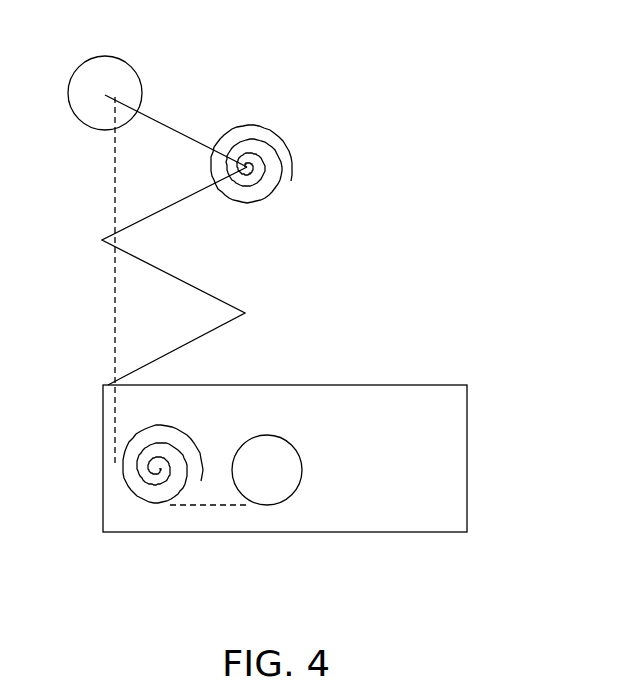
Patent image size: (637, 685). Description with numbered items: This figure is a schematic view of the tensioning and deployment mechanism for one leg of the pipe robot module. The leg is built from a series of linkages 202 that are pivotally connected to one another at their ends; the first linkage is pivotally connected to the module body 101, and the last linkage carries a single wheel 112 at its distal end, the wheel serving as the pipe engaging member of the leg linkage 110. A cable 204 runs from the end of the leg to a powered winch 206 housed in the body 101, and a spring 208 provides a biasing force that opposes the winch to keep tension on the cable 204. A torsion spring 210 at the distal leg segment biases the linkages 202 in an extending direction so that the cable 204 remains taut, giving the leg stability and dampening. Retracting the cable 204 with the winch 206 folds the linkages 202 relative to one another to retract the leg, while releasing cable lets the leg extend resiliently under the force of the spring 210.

The body 101 is at (413, 520).
The linkage 110 is at (185, 115).
The wheel 112 is at (116, 73).
The linkage 202 is at (197, 140).
The cable 204 is at (109, 336).
The powered winch 206 is at (272, 484).
The spring 208 is at (129, 495).
The torsion spring 210 is at (291, 146).